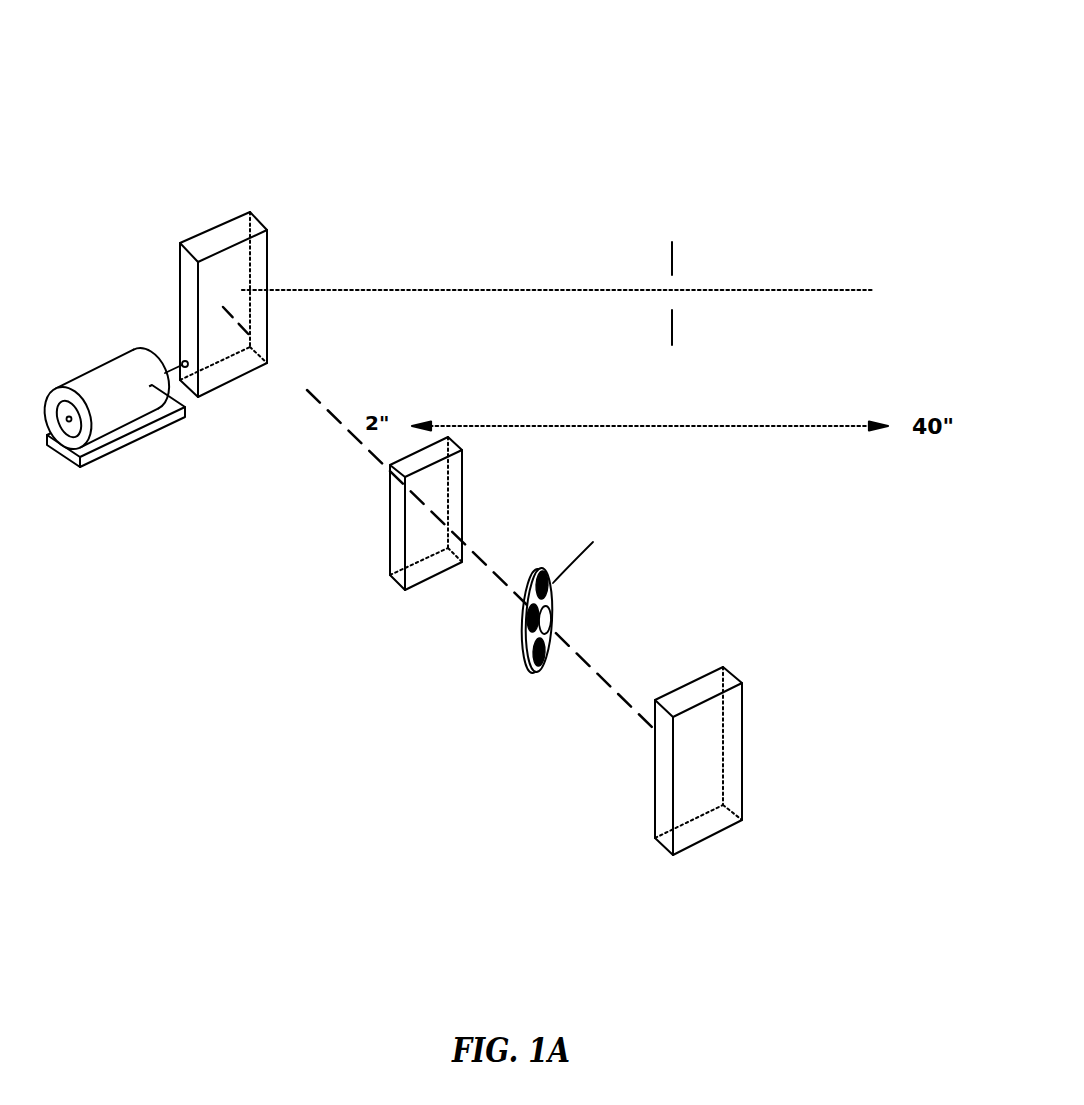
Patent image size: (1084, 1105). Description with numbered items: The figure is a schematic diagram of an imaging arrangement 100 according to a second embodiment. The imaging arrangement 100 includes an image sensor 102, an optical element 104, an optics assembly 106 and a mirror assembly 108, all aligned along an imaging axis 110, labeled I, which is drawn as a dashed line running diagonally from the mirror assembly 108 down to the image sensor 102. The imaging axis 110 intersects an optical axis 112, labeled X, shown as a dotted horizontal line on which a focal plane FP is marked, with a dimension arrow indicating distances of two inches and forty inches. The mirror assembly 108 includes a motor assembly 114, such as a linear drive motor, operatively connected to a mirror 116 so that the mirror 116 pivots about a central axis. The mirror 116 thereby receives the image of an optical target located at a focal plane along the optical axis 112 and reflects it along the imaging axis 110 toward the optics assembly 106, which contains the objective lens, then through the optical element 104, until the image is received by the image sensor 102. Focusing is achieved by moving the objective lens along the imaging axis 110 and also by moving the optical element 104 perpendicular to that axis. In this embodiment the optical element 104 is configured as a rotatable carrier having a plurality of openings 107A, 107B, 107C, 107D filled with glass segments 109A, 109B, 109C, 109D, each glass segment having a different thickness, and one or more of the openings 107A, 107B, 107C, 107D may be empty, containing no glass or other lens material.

The imaging arrangement 100 is at (565, 125).
The image sensor 102 is at (743, 718).
The optical element 104 is at (585, 605).
The optics assembly 106 is at (390, 520).
The opening 107A is at (553, 607).
The opening 107B is at (537, 568).
The opening 107C is at (527, 610).
The opening 107D is at (540, 668).
The mirror assembly 108 is at (206, 240).
The glass segment 109A is at (552, 630).
The glass segment 109B is at (544, 571).
The glass segment 109C is at (525, 633).
The glass segment 109D is at (538, 680).
The imaging axis 110 is at (330, 411).
The optical axis 112 is at (750, 290).
The motor assembly 114 is at (148, 434).
The mirror 116 is at (268, 266).